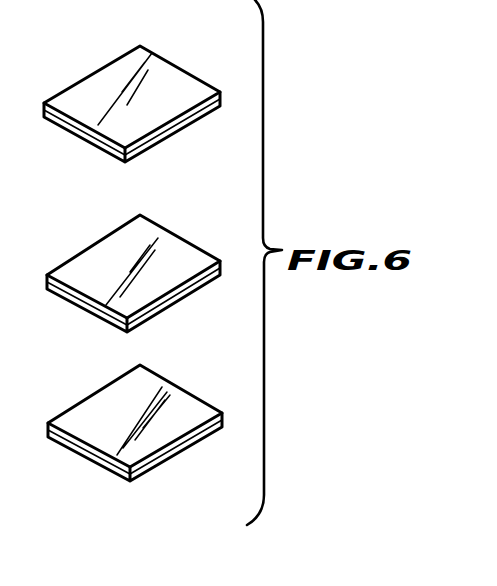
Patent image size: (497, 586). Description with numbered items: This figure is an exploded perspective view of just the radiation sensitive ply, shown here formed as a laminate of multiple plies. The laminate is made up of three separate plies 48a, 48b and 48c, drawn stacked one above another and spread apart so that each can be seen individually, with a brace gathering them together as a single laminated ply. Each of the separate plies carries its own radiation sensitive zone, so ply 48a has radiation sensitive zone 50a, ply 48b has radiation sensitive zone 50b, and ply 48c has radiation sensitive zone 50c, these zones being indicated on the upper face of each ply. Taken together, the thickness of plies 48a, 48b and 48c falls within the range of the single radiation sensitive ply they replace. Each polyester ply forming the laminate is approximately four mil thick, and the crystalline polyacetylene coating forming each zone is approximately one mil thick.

The radiation sensitive zone 50a is at (163, 398).
The radiation sensitive zone 50b is at (167, 245).
The radiation sensitive zone 50c is at (163, 73).
The separate ply 48a is at (130, 480).
The separate ply 48b is at (98, 315).
The separate ply 48c is at (100, 145).